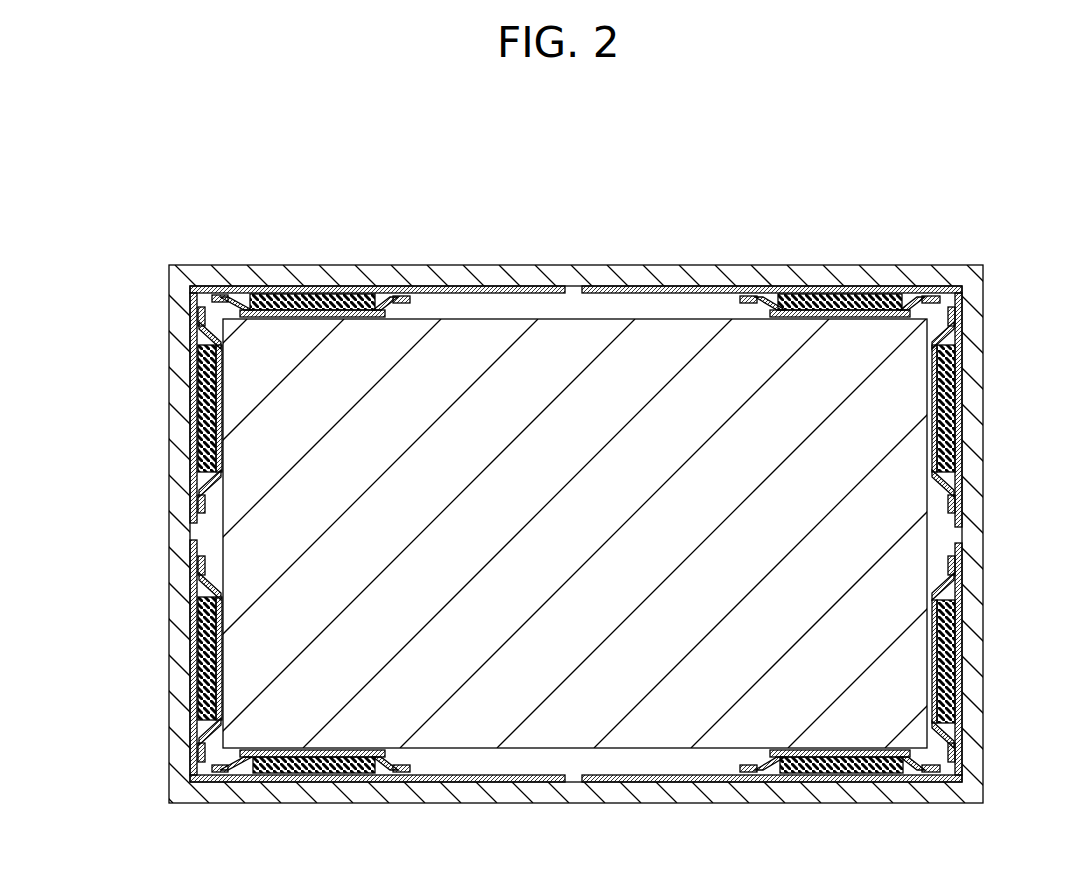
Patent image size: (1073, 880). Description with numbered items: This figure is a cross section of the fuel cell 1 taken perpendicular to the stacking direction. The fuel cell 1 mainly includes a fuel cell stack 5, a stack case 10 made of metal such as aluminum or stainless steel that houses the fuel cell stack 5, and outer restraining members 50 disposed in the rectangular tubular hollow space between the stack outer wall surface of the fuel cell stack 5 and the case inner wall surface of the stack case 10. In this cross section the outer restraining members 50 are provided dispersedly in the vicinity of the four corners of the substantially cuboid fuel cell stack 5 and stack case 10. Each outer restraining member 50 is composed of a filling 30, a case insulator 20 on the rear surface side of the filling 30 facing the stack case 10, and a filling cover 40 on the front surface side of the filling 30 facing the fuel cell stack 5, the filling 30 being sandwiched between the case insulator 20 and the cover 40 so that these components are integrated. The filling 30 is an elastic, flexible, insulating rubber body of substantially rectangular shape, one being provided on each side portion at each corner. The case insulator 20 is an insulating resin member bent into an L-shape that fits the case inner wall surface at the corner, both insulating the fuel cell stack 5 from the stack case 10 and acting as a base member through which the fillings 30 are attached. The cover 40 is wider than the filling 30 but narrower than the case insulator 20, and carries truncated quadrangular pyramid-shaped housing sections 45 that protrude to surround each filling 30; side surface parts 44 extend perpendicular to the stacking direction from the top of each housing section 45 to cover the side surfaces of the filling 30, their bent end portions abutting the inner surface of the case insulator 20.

The fuel cell 1 is at (984, 190).
The fuel cell stack 5 is at (573, 316).
The stack case 10 is at (182, 263).
The case insulator 20 is at (373, 289).
The filling 30 is at (298, 297).
The filling cover 40 is at (511, 492).
The side surface part 44 is at (212, 318).
The housing section 45 is at (312, 319).
The outer restraining member 50 is at (243, 285).